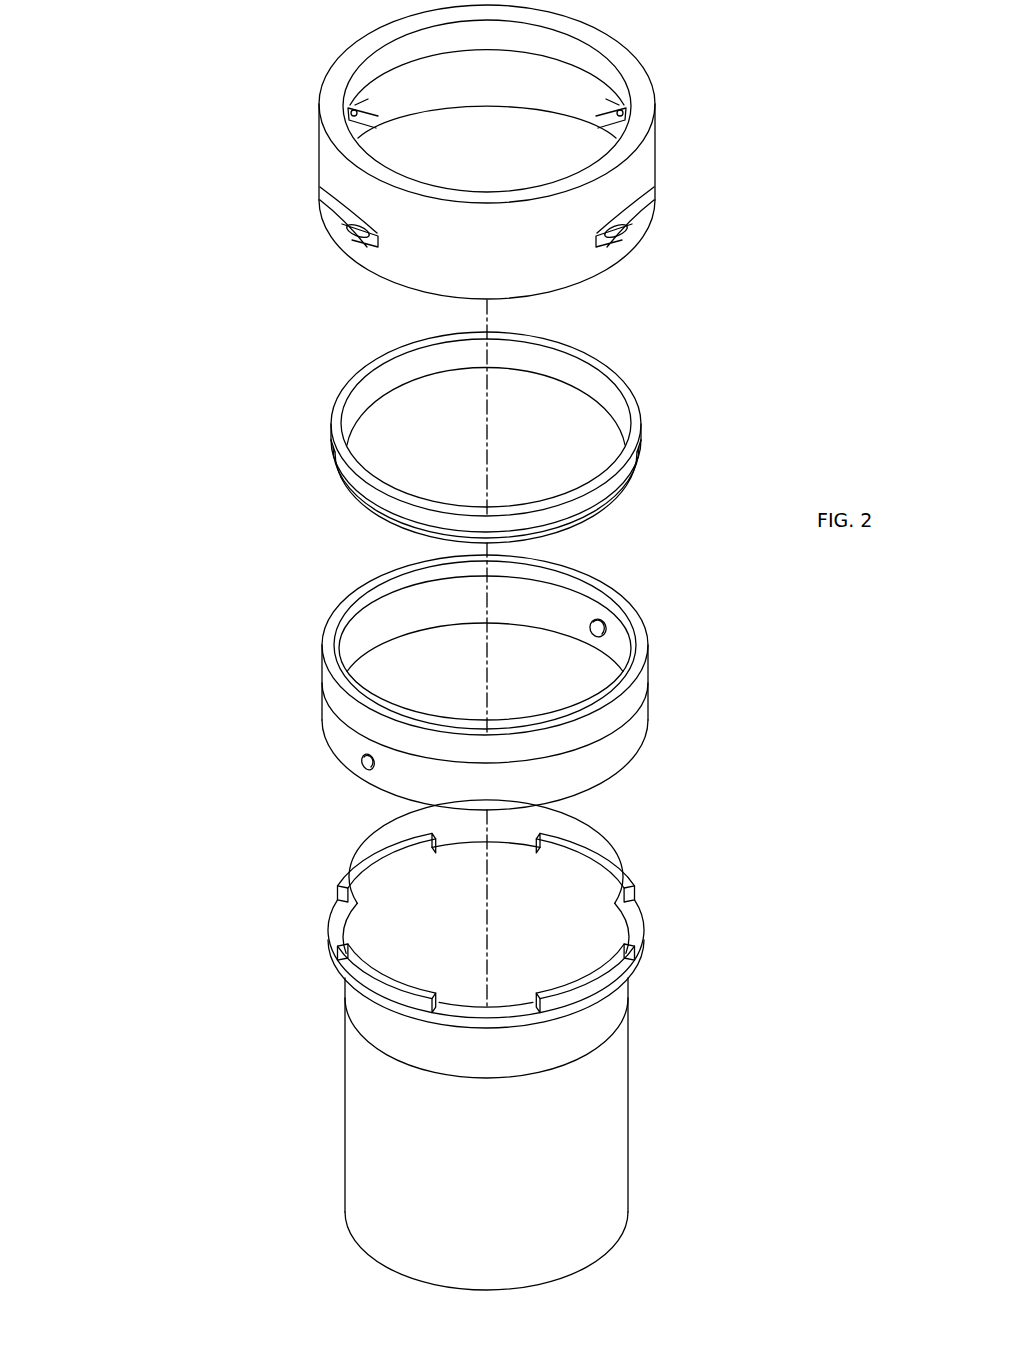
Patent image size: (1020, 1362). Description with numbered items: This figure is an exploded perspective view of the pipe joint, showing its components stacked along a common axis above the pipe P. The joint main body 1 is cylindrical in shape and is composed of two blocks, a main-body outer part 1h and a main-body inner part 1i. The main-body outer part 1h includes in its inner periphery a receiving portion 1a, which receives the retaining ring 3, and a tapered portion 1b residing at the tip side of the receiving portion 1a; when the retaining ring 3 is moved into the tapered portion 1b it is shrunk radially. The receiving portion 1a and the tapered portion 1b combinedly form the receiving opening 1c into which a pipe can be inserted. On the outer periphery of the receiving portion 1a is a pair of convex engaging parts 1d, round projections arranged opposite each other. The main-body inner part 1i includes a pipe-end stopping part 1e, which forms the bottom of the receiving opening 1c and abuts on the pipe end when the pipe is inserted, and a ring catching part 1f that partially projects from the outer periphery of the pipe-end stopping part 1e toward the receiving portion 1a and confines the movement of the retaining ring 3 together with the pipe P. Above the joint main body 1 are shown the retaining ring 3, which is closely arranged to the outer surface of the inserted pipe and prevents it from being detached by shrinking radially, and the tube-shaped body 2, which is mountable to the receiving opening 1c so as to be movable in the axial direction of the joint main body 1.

The joint main body 1 is at (498, 781).
The receiving portion 1a is at (439, 648).
The tapered portion 1b is at (366, 599).
The receiving opening 1c is at (419, 635).
The convex engaging part 1d is at (358, 771).
The pipe-end stopping part 1e is at (333, 912).
The ring catching part 1f is at (372, 853).
The main-body outer part 1h is at (473, 672).
The main-body inner part 1i is at (499, 914).
The tube-shaped body 2 is at (682, 134).
The retaining ring 3 is at (682, 469).
The pipe P is at (612, 1118).